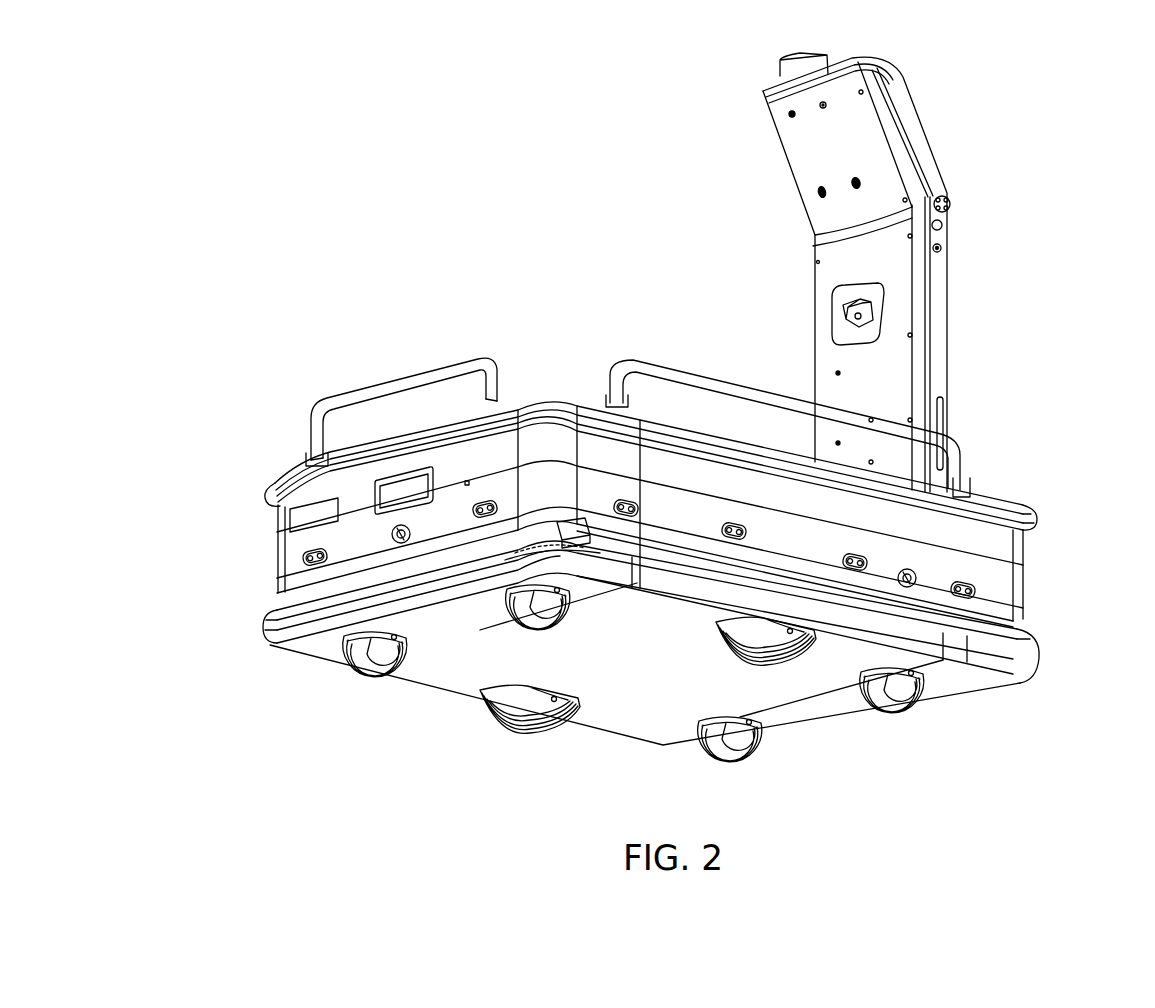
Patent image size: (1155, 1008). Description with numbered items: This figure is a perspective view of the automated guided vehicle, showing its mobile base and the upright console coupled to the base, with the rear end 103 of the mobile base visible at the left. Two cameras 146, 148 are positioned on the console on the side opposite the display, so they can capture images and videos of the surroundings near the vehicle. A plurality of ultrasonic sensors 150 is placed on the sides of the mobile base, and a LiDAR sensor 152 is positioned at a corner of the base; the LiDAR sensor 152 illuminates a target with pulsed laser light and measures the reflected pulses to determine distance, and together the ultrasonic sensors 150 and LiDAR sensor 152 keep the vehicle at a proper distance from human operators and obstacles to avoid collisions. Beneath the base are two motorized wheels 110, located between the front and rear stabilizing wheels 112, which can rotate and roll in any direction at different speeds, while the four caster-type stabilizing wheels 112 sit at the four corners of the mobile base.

The rear end 103 is at (303, 473).
The motorized wheels 110 is at (733, 650).
The stabilizing wheels 112 is at (525, 606).
The camera 146 is at (819, 193).
The camera 148 is at (853, 182).
The ultrasonic sensors 150 is at (484, 503).
The LiDAR sensor 152 is at (565, 520).